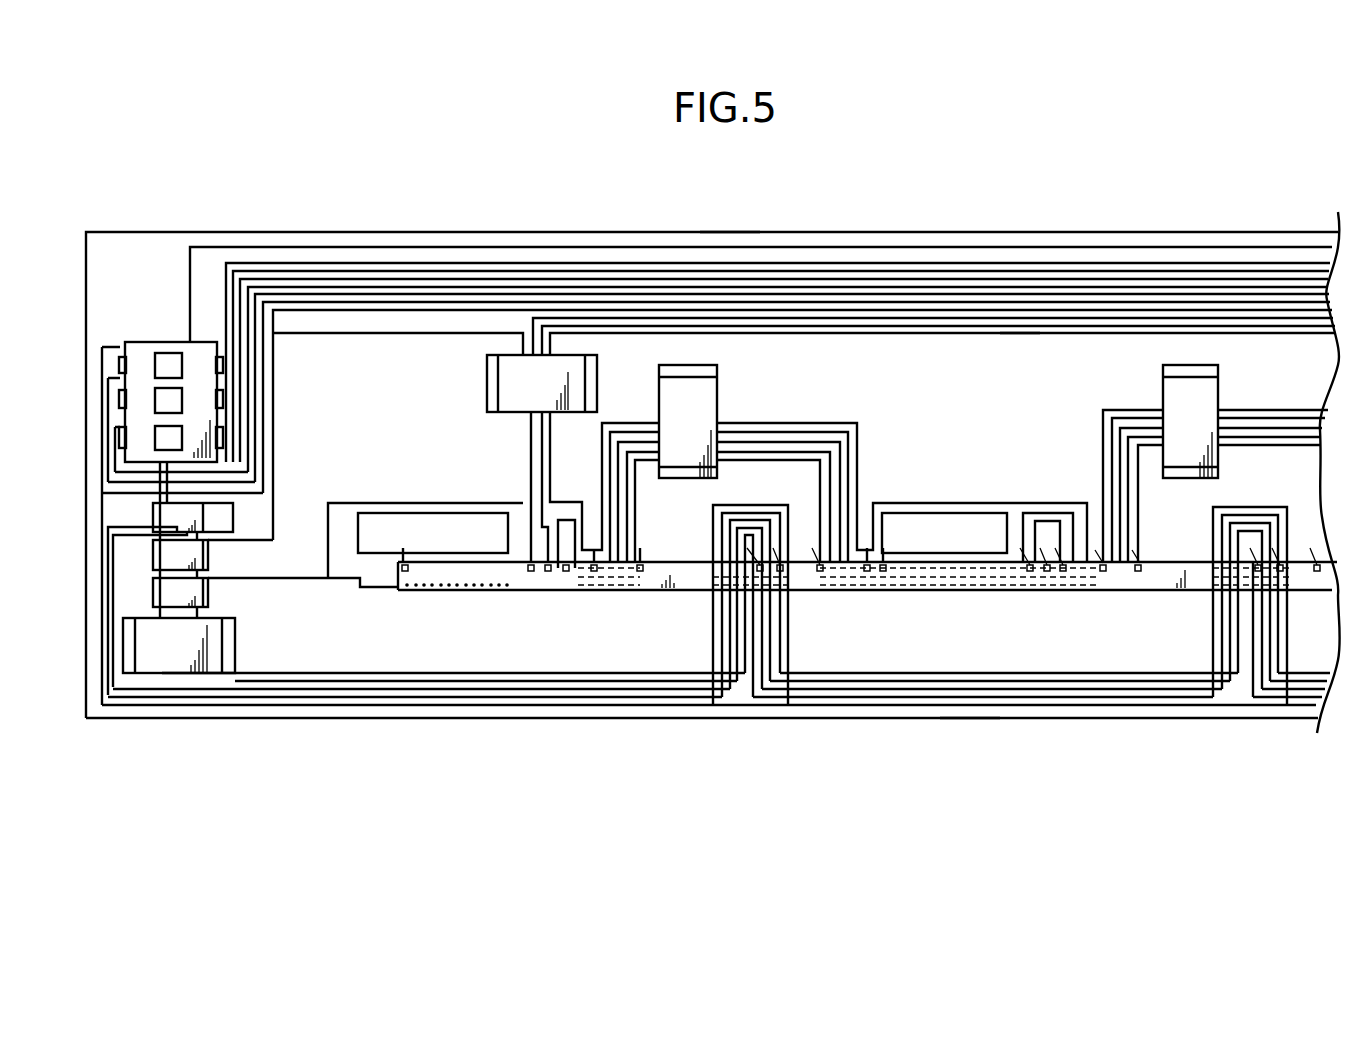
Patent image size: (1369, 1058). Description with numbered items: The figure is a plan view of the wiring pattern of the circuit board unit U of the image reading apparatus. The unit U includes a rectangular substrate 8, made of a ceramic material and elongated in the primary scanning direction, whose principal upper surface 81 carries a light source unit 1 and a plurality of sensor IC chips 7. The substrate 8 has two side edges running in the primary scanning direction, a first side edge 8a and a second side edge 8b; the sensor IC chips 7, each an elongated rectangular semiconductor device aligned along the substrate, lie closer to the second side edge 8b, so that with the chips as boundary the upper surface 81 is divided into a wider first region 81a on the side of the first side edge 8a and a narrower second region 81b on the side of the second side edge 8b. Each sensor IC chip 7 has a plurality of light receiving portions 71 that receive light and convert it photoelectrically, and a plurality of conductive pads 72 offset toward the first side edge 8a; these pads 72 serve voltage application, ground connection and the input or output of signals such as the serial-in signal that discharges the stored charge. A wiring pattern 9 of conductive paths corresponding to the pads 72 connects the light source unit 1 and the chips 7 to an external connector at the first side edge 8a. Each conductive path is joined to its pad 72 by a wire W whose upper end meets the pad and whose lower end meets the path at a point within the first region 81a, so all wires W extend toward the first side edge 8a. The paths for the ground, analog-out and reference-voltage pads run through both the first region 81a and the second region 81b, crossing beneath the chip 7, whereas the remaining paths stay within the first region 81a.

The circuit board unit U is at (86, 232).
The light source unit 1 is at (130, 438).
The sensor IC chip 7 is at (430, 562).
The light receiving portion 71 is at (490, 592).
The conductive pad 72 is at (403, 590).
The substrate 8 is at (86, 313).
The principal surface 81 is at (150, 245).
The first side edge 8a is at (742, 232).
The second side edge 8b is at (967, 720).
The first region 81a is at (1023, 355).
The second region 81b is at (1103, 662).
The wiring pattern 9 is at (1313, 650).
The wire W is at (403, 562).